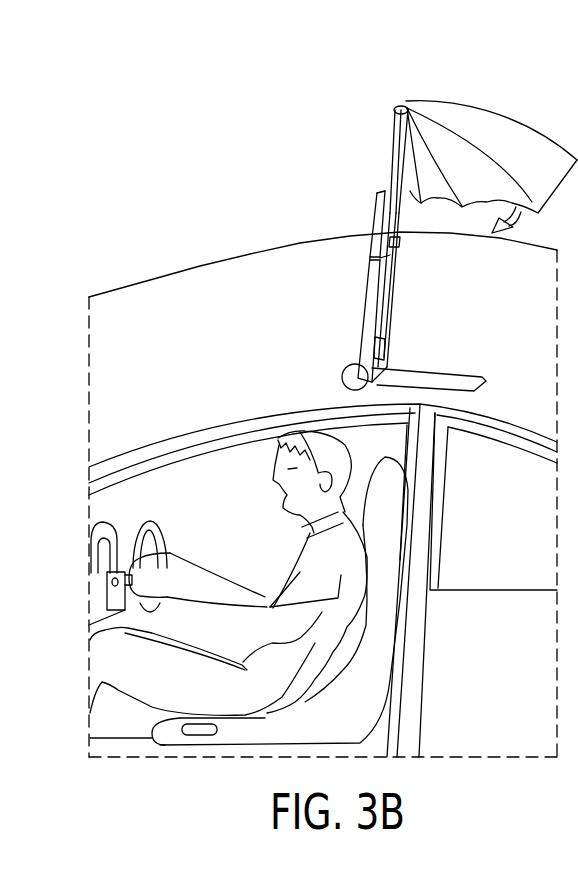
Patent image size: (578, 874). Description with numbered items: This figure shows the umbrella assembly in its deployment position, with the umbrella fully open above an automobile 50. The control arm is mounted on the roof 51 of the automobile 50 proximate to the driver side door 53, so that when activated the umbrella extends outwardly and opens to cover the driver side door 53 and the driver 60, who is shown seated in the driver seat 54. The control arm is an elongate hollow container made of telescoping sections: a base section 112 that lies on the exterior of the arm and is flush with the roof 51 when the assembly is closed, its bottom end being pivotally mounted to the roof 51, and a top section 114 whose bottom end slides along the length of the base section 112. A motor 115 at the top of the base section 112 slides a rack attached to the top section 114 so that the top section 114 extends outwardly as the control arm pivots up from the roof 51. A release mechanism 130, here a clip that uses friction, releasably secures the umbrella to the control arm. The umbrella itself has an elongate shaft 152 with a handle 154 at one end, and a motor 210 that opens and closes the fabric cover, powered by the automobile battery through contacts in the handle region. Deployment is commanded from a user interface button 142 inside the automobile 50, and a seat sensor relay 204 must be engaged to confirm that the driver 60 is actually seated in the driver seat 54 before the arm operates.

The automobile 50 is at (284, 485).
The roof 51 is at (223, 255).
The driver side door 53 is at (250, 433).
The driver seat 54 is at (283, 628).
The driver 60 is at (287, 459).
The base section 112 is at (373, 298).
The top section 114 is at (393, 152).
The motor 115 is at (373, 217).
The release mechanism 130 is at (372, 252).
The user interface button 142 is at (92, 523).
The shaft 152 is at (396, 230).
The handle 154 is at (390, 347).
The seat sensor relay 204 is at (200, 737).
The motor 210 is at (403, 106).